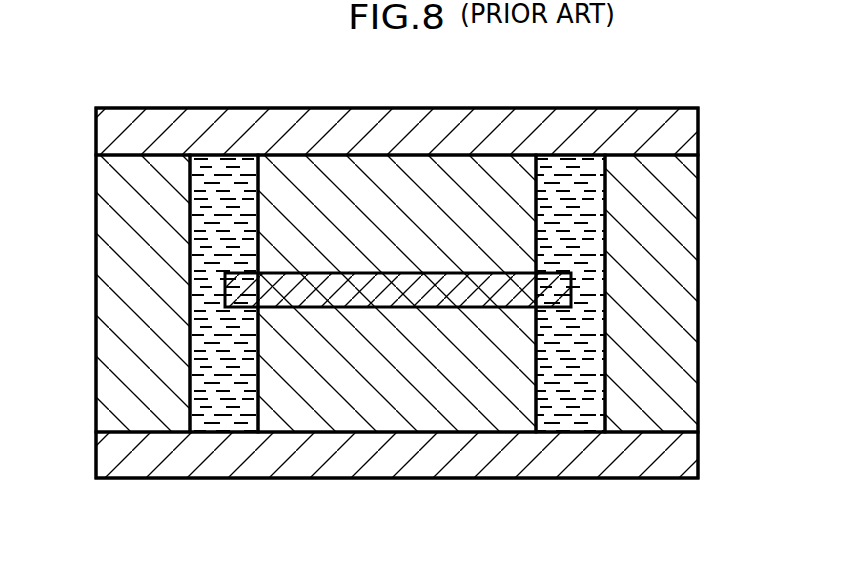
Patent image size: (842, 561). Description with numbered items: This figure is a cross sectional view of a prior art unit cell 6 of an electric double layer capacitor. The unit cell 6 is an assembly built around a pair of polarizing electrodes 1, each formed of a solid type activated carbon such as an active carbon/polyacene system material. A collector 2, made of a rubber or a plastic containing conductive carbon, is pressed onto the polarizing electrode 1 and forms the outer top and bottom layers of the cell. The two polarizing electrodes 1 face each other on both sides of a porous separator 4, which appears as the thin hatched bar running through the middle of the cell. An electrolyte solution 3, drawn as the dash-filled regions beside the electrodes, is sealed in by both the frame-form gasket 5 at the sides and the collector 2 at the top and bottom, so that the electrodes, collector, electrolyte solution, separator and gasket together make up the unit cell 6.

The polarizing electrode 1 is at (357, 193).
The collector 2 is at (532, 124).
The electrolyte solution 3 is at (585, 198).
The porous separator 4 is at (552, 290).
The frame-form gasket 5 is at (133, 394).
The unit cell 6 is at (167, 98).